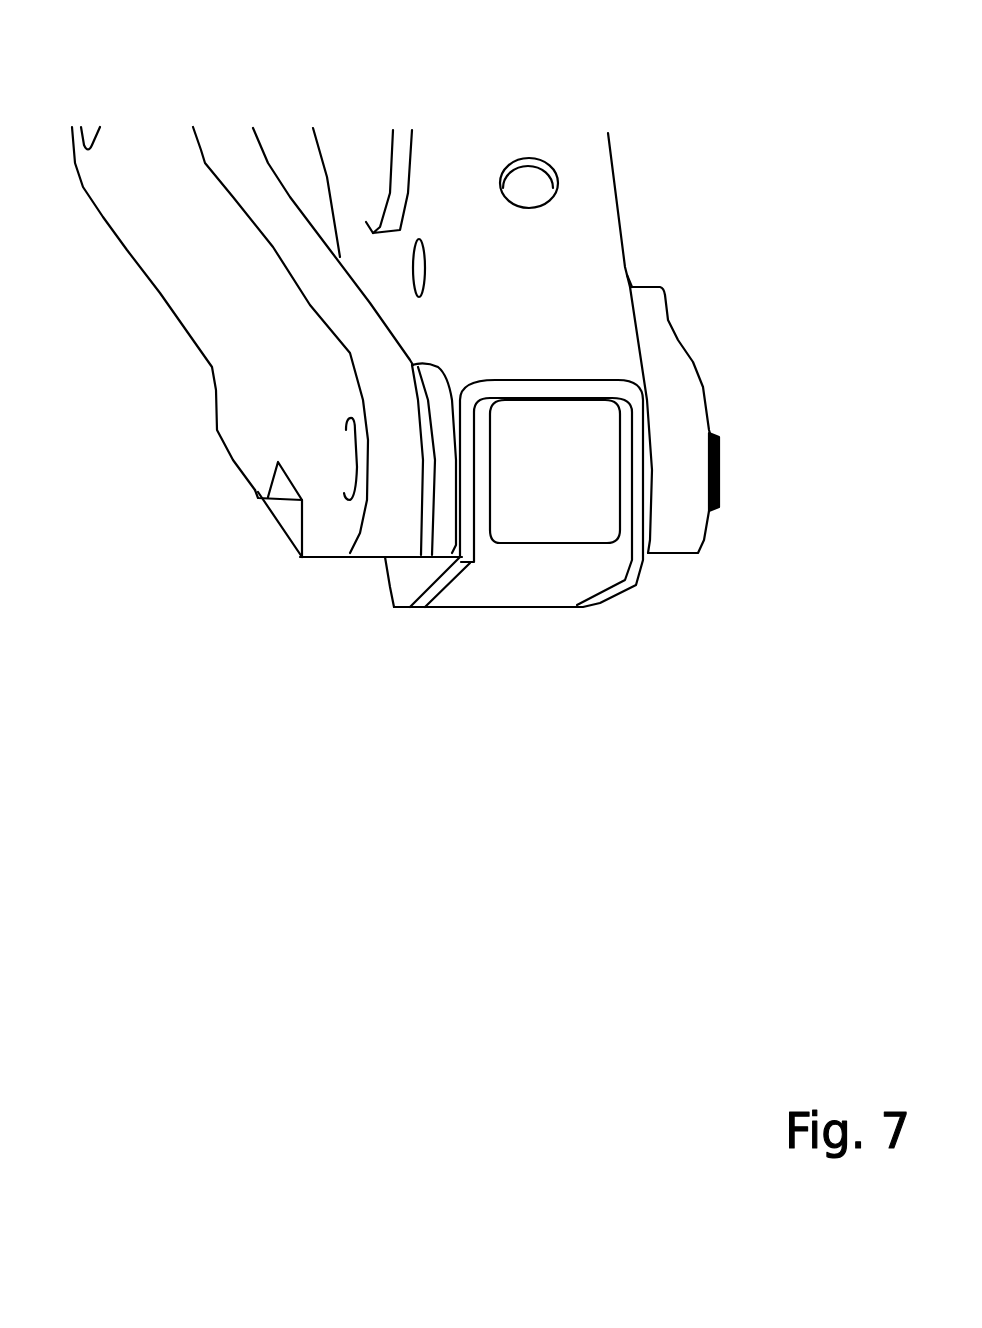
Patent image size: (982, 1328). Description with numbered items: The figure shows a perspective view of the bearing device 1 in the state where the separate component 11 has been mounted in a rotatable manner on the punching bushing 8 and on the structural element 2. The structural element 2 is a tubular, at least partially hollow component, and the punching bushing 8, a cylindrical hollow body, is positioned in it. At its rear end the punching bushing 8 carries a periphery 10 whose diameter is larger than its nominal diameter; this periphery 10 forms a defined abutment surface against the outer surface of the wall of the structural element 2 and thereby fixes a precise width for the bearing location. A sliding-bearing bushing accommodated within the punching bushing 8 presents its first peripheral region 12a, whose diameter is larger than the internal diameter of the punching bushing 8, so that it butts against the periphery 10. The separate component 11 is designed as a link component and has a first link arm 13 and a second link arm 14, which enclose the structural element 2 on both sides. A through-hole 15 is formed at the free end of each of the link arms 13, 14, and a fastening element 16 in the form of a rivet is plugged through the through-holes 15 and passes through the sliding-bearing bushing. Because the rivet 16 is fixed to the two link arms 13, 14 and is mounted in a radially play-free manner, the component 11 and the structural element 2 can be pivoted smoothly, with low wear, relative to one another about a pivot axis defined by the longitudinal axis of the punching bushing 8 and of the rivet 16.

The bearing device 1 is at (773, 242).
The structural element 2 is at (593, 190).
The punching bushing 8 is at (598, 518).
The periphery 10 is at (435, 540).
The separate component 11 is at (185, 293).
The first peripheral region 12a is at (425, 398).
The first link arm 13 is at (248, 178).
The second link arm 14 is at (687, 387).
The through-hole 15 is at (355, 430).
The fastening element 16 is at (720, 438).